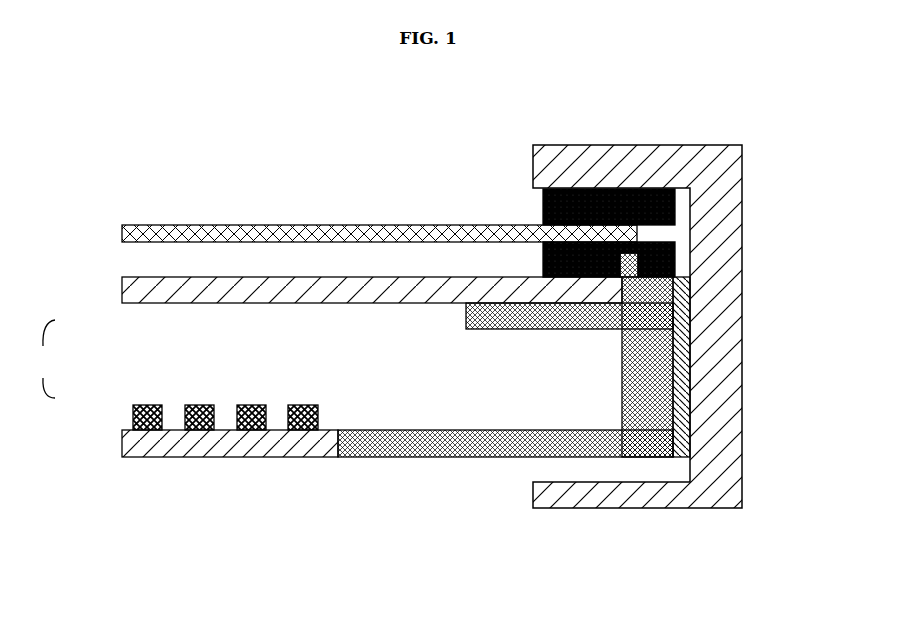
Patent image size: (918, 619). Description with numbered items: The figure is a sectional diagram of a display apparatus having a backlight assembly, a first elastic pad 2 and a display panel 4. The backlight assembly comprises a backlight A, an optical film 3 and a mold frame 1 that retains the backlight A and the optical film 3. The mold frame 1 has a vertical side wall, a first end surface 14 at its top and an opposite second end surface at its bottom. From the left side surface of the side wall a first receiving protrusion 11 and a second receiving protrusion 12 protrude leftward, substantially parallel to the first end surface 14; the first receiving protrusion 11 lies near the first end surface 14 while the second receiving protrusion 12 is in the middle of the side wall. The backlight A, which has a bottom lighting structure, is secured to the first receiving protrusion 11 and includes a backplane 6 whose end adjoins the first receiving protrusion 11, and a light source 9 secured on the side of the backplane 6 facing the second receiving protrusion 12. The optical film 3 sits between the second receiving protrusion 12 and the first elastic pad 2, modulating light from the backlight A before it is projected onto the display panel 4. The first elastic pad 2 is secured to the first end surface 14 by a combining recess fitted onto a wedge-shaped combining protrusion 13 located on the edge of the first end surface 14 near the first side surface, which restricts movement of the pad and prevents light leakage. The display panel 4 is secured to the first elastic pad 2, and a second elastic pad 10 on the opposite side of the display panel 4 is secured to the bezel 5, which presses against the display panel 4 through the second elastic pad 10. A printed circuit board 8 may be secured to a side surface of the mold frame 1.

The mold frame 1 is at (665, 363).
The first elastic pad 2 is at (688, 250).
The optical film 3 is at (126, 282).
The display panel 4 is at (140, 226).
The bezel 5 is at (713, 328).
The backplane 6 is at (126, 432).
The printed circuit board 8 is at (682, 415).
The light source 9 is at (137, 407).
The second elastic pad 10 is at (690, 180).
The first receiving protrusion 11 is at (400, 455).
The second receiving protrusion 12 is at (530, 328).
The combining protrusion 13 is at (612, 230).
The first end surface 14 is at (675, 270).
The backlight A is at (45, 359).